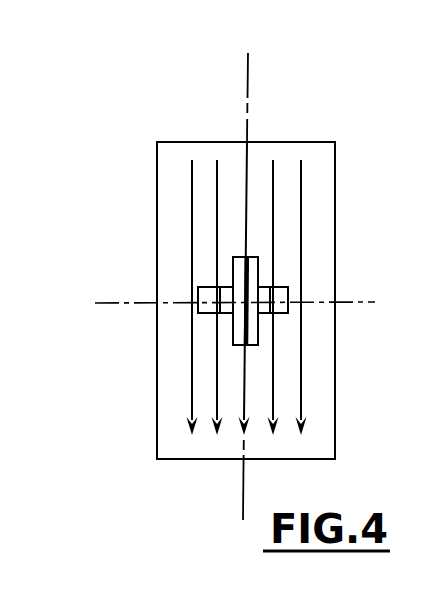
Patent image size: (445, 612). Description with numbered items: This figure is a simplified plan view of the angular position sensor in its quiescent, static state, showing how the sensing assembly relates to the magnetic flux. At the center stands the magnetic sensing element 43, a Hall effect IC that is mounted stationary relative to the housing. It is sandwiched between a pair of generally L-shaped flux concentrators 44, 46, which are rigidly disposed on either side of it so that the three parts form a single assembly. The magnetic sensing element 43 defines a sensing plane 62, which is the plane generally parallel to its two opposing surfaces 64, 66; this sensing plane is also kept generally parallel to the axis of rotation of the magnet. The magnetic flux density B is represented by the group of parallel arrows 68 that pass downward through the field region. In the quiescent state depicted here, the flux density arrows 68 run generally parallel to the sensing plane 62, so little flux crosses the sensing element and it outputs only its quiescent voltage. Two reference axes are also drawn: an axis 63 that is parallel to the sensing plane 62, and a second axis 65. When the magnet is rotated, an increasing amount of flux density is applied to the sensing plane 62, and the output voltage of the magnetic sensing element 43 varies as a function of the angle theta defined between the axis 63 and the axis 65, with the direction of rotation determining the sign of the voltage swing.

The magnetic sensing element 43 is at (252, 327).
The L-shaped flux concentrator 44 is at (283, 295).
The L-shaped flux concentrator 46 is at (200, 296).
The sensing plane 62 is at (258, 258).
The axis parallel to the sensing plane 63 is at (247, 95).
The opposing surface 64 is at (260, 270).
The axis 65 is at (248, 73).
The opposing surface 66 is at (232, 273).
The magnetic flux density arrows 68 is at (301, 393).